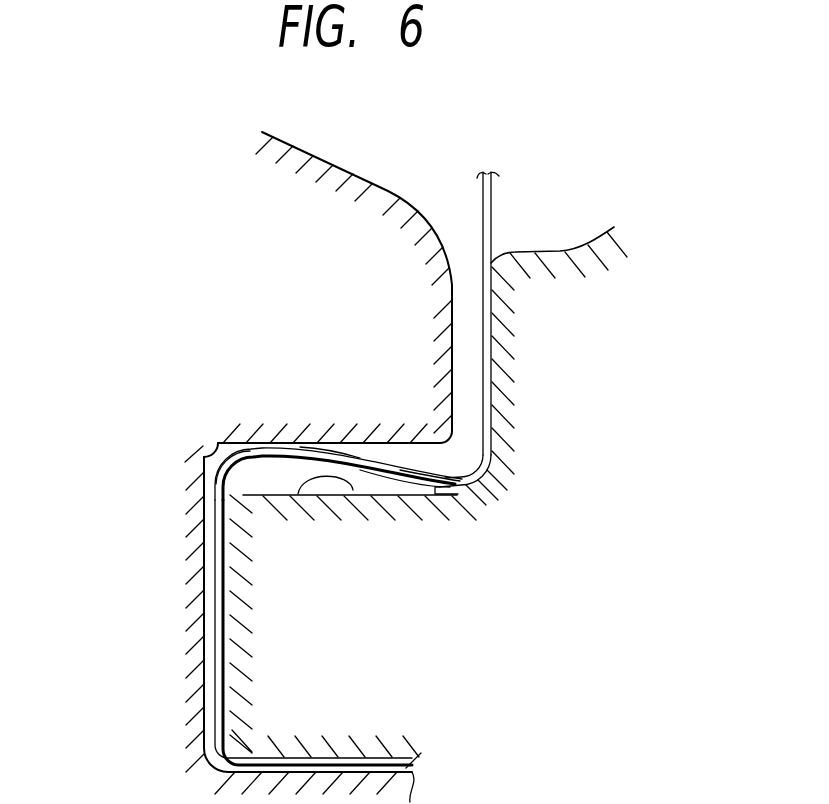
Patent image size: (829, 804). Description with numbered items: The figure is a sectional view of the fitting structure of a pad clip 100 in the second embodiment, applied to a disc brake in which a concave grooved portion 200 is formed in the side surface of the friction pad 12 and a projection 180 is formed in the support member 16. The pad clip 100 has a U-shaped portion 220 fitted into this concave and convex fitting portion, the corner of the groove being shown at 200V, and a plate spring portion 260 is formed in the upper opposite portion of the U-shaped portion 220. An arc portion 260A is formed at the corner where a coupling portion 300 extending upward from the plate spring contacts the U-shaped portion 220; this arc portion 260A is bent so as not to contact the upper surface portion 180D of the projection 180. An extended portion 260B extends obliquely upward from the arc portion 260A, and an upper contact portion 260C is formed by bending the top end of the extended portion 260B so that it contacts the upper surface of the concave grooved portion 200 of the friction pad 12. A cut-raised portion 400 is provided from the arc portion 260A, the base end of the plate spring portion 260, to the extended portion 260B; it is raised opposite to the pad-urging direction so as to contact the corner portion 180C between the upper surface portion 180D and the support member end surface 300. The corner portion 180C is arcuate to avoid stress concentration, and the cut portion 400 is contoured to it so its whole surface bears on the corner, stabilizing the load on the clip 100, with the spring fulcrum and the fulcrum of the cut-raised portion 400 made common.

The friction pad 12 is at (303, 148).
The support member 16 is at (590, 226).
The pad clip 100 is at (495, 210).
The projection 180 is at (273, 648).
The corner portion 180C is at (466, 484).
The upper surface portion 180D is at (353, 490).
The concave grooved portion 200 is at (200, 575).
The channel corner 200V is at (204, 450).
The U-shaped portion 220 is at (208, 511).
The plate spring portion 260 is at (413, 345).
The arc portion 260A is at (432, 460).
The extended portion 260B is at (333, 452).
The upper contact portion 260C is at (238, 445).
The coupling portion 300 is at (493, 343).
The cut-raised portion 400 is at (462, 497).